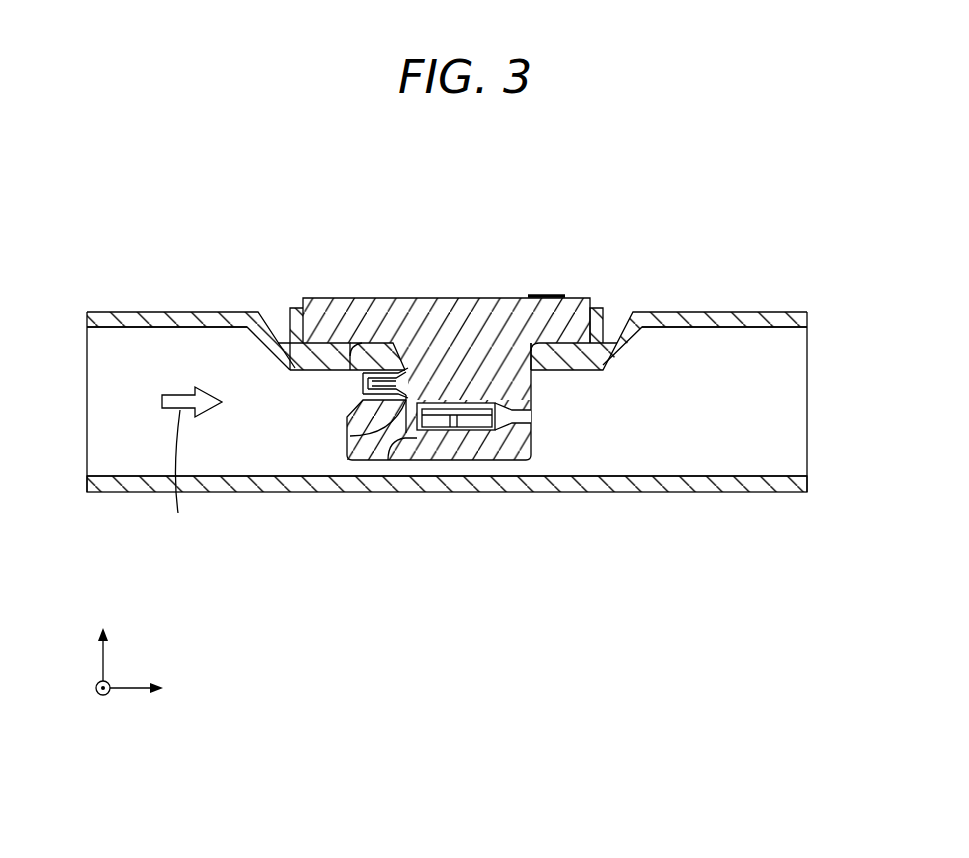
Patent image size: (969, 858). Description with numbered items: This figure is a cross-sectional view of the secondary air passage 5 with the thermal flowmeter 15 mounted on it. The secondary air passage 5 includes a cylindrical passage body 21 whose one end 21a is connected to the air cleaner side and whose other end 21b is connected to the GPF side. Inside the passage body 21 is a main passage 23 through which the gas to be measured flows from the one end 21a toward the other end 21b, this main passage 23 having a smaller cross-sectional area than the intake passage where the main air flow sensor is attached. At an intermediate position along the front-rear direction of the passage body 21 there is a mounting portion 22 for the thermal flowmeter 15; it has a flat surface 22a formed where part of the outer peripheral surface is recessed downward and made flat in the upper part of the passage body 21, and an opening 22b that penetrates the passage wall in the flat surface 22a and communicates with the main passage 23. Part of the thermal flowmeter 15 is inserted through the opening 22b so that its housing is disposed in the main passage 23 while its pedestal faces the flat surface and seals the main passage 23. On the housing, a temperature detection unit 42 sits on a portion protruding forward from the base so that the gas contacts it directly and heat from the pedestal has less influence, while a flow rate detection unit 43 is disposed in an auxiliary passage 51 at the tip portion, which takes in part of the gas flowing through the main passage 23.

The secondary air passage 5 is at (785, 198).
The thermal flowmeter 15 is at (462, 297).
The passage body 21 is at (750, 313).
The one end 21a is at (87, 440).
The other end 21b is at (807, 428).
The mounting portion 22 is at (562, 350).
The flat surface 22a is at (326, 340).
The opening 22b is at (366, 340).
The main passage 23 is at (690, 350).
The temperature detection unit 42 is at (362, 383).
The flow rate detection unit 43 is at (457, 422).
The auxiliary passage 51 is at (400, 427).